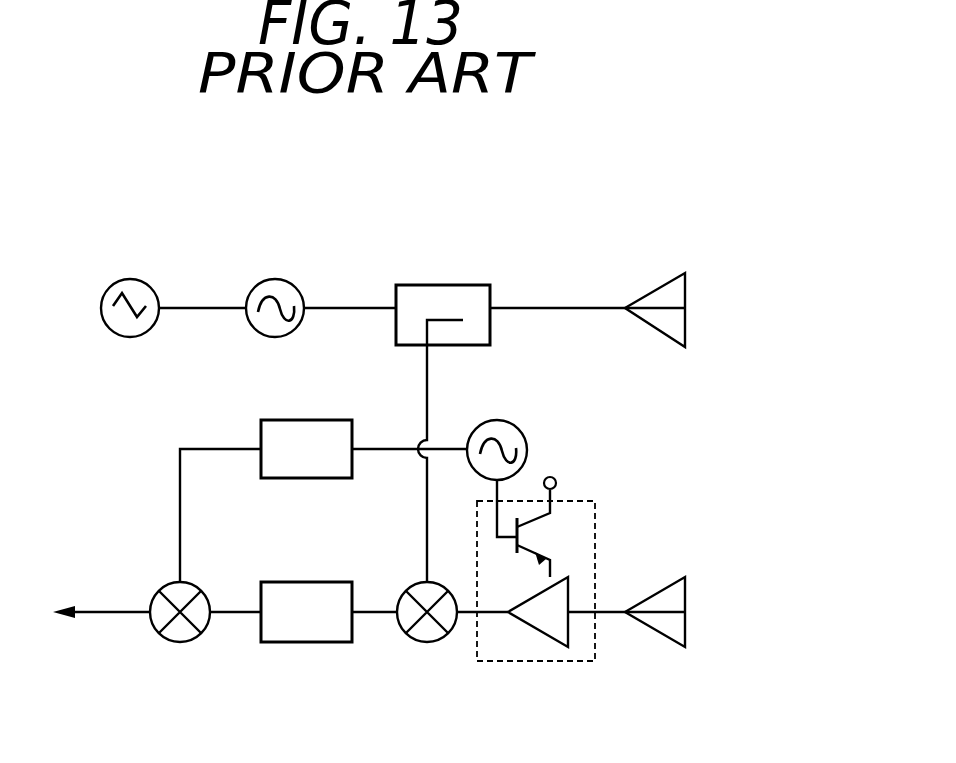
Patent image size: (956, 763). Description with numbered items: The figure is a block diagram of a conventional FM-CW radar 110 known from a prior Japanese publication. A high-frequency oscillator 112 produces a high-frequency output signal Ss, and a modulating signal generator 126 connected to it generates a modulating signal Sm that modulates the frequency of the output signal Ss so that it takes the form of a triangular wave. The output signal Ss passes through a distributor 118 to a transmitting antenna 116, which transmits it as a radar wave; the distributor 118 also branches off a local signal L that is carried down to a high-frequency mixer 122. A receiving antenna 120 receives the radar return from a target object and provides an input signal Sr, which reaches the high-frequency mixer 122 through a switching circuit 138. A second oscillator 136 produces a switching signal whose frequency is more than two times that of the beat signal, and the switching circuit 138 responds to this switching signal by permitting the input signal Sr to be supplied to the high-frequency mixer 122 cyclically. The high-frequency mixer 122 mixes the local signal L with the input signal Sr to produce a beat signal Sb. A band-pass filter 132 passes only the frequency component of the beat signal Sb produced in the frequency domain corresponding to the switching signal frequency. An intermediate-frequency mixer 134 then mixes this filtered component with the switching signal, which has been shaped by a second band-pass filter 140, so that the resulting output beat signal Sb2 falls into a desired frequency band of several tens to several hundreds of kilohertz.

The FM-CW radar 110 is at (550, 200).
The high-frequency oscillator 112 is at (278, 278).
The transmitting antenna 116 is at (656, 292).
The distributor 118 is at (448, 284).
The receiving antenna 120 is at (662, 592).
The high-frequency mixer 122 is at (402, 591).
The modulating signal generator 126 is at (130, 278).
The band-pass filter 132 is at (307, 582).
The intermediate-frequency mixer 134 is at (168, 586).
The second oscillator 136 is at (500, 420).
The switching circuit 138 is at (582, 500).
The band-pass filter 140 is at (311, 420).
The local signal L is at (426, 503).
The modulation signal Sm is at (197, 307).
The output signal Ss is at (353, 307).
The beat signal Sb is at (378, 616).
The second beat signal Sb2 is at (124, 616).
The input signal Sr is at (615, 617).